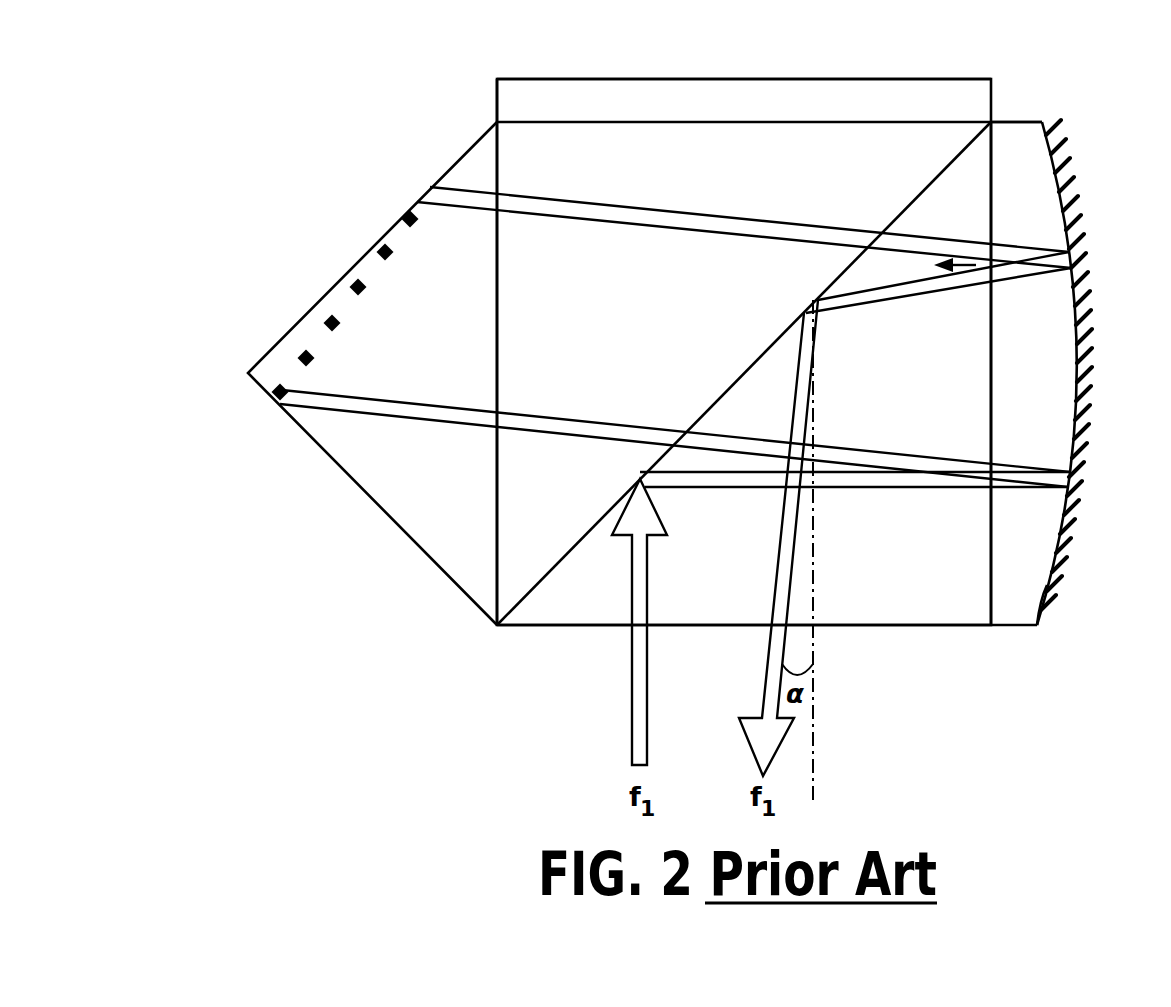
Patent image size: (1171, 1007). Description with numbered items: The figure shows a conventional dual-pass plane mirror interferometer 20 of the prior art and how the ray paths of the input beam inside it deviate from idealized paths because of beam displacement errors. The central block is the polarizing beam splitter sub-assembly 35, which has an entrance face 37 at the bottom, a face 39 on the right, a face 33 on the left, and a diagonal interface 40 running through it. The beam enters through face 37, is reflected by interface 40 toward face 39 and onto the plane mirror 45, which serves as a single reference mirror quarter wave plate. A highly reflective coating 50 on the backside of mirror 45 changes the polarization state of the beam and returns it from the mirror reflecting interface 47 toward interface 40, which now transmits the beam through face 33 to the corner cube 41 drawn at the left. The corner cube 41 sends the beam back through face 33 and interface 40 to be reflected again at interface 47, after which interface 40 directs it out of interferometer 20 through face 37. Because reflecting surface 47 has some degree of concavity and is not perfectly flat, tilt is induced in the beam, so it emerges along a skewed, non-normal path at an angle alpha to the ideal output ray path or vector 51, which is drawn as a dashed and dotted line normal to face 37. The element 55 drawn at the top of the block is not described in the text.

The interferometer 20 is at (262, 80).
The top plate 55 is at (838, 79).
The plane mirror 45 is at (1008, 122).
The highly reflective coating 50 is at (1078, 182).
The interface 40 is at (905, 207).
The corner cube 41 is at (321, 262).
The face 33 is at (497, 262).
The face 39 is at (991, 382).
The face 37 is at (549, 626).
The polarizing beam splitter sub-assembly 35 is at (920, 592).
The reflecting interface 47 is at (1036, 627).
The ideal output ray path 51 is at (813, 730).